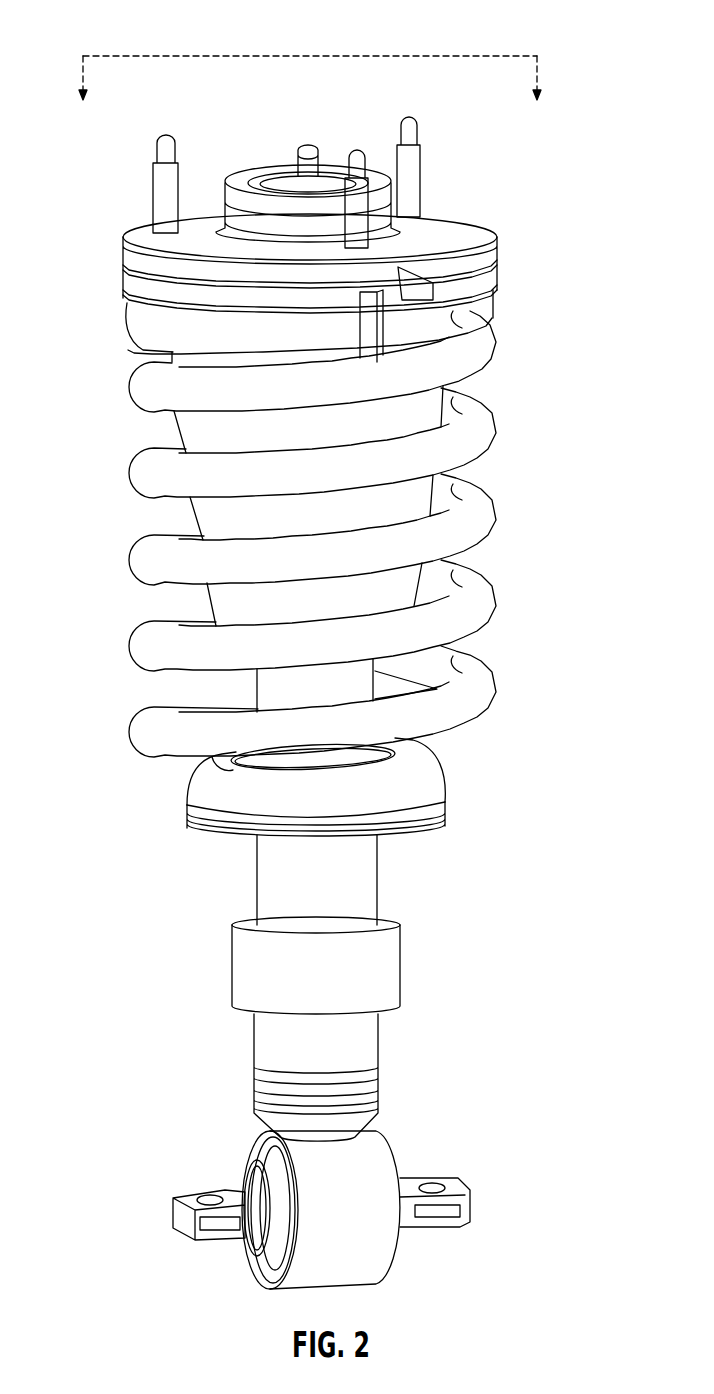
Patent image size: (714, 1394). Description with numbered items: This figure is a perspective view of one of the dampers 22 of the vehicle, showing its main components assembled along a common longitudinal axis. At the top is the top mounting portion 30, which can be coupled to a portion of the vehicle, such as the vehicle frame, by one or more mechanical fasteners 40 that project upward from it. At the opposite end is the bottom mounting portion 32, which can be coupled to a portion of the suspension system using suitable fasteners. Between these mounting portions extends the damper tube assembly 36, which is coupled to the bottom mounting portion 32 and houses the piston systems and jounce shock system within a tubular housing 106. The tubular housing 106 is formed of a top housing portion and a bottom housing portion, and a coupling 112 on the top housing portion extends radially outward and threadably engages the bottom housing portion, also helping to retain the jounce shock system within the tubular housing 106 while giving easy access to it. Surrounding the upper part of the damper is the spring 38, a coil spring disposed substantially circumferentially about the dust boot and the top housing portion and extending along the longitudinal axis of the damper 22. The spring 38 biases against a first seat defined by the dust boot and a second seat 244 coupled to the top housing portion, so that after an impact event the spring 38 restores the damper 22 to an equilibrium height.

The damper 22 is at (548, 40).
The top mounting portion 30 is at (452, 194).
The bottom mounting portion 32 is at (427, 1150).
The damper tube assembly 36 is at (448, 866).
The spring 38 is at (492, 507).
The mechanical fasteners 40 is at (165, 135).
The tubular housing 106 is at (248, 872).
The coupling 112 is at (406, 958).
The second seat 244 is at (445, 810).